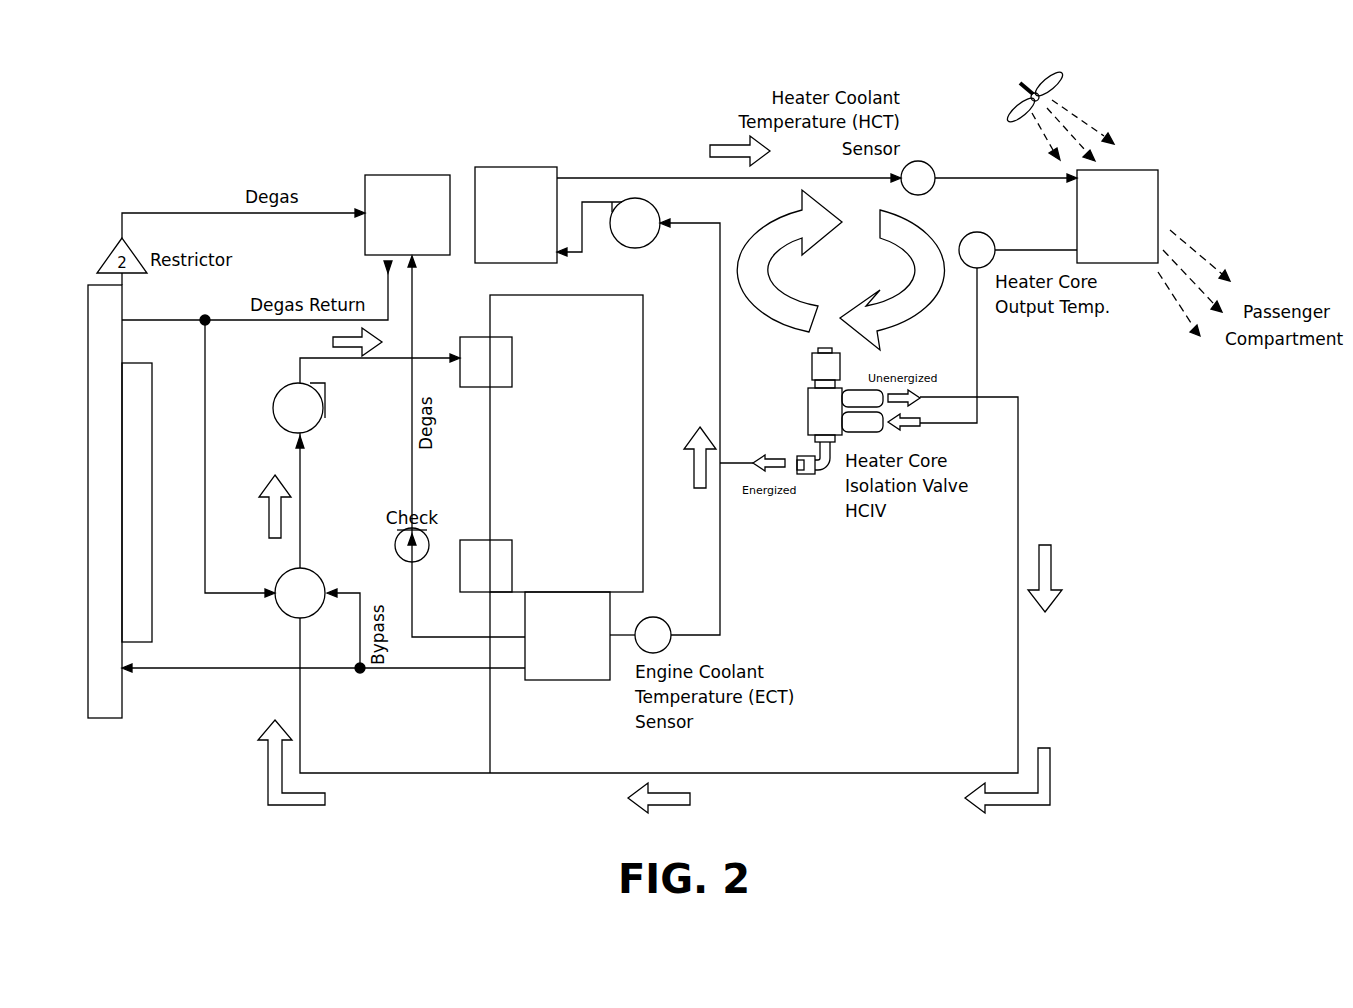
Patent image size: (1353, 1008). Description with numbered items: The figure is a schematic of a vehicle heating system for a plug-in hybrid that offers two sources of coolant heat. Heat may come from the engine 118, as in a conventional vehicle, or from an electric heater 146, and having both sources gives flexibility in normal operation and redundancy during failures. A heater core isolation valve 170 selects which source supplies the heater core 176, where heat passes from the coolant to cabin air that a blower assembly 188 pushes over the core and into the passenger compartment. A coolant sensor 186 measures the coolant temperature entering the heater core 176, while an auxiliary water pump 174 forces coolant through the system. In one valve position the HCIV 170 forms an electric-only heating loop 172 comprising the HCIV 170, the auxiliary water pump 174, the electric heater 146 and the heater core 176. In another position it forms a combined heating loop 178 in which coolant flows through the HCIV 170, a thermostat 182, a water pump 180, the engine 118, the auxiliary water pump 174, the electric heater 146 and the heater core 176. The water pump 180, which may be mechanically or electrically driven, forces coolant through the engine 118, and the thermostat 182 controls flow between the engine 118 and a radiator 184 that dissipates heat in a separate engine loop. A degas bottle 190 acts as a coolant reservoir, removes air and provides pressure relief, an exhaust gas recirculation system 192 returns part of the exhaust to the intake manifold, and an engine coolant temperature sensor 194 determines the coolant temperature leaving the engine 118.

The engine 118 is at (644, 415).
The electric heater 146 is at (515, 167).
The heater core isolation valve 170 is at (808, 410).
The electric-only heating loop 172 is at (766, 218).
The auxiliary water pump 174 is at (637, 249).
The heater core 176 is at (1160, 198).
The combined heating loop 178 is at (1048, 545).
The water pump 180 is at (273, 410).
The thermostat 182 is at (318, 575).
The radiator 184 is at (125, 695).
The coolant sensor 186 is at (918, 161).
The blower assembly 188 is at (1057, 70).
The degas bottle 190 is at (407, 175).
The exhaust gas recirculation system 192 is at (474, 594).
The engine coolant temperature sensor 194 is at (651, 617).